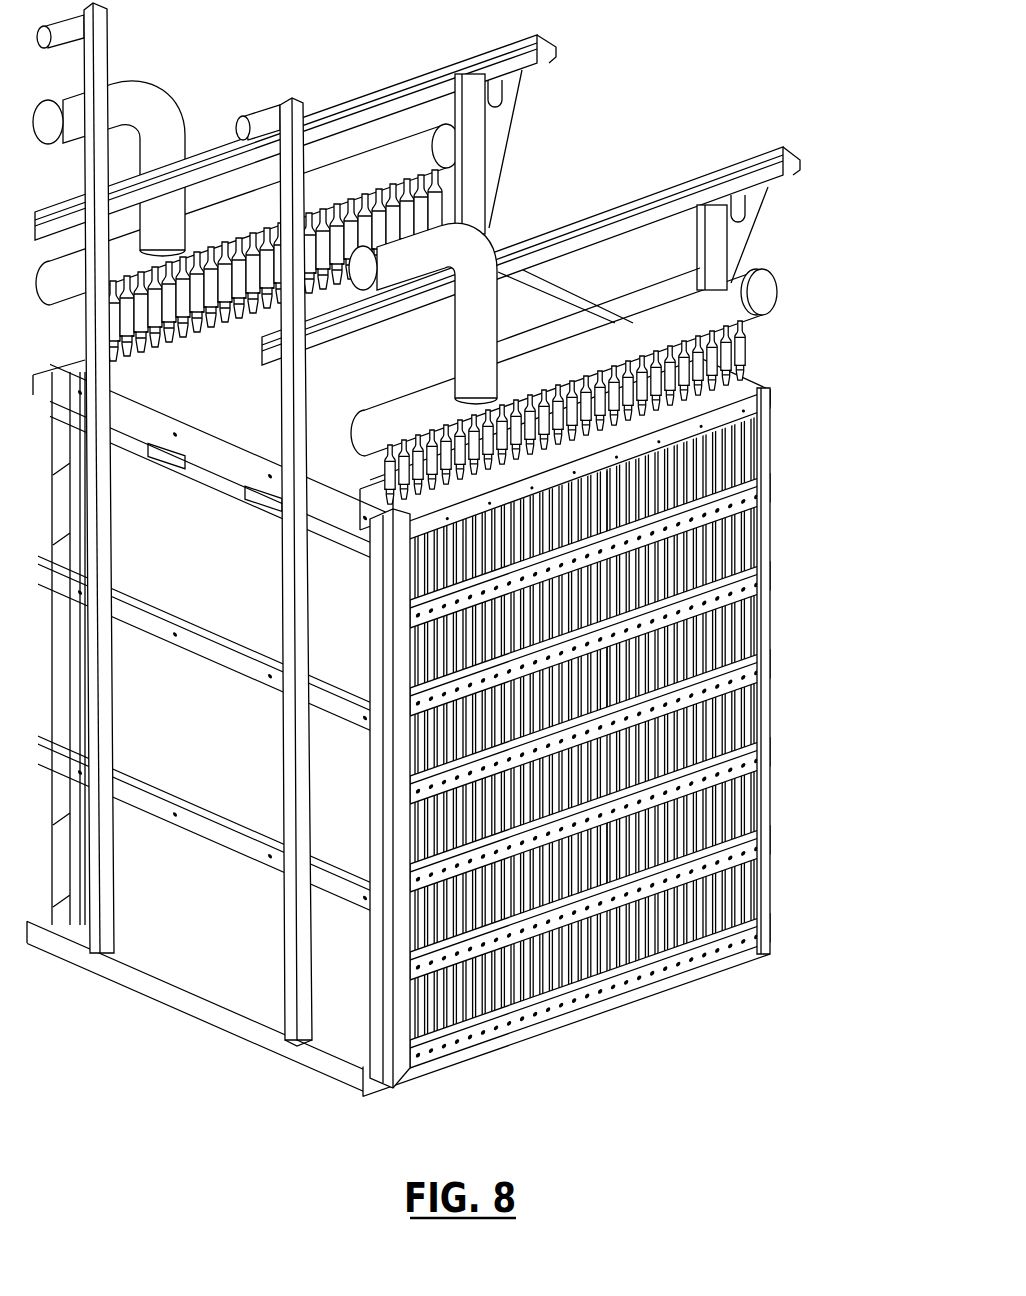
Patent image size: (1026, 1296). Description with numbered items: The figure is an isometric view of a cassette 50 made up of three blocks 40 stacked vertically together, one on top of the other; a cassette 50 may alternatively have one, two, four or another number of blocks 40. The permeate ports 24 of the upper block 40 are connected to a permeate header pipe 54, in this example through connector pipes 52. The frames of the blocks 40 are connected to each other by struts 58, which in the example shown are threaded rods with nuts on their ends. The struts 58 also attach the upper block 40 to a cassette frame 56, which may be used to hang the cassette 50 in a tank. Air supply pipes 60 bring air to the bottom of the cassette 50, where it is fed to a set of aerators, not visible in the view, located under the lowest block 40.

The permeate port 24 is at (757, 383).
The block 40 is at (740, 462).
The cassette 50 is at (888, 995).
The connector pipe 52 is at (747, 366).
The permeate header pipe 54 is at (738, 298).
The cassette frame 56 is at (780, 162).
The strut 58 is at (612, 527).
The air supply pipe 60 is at (248, 118).